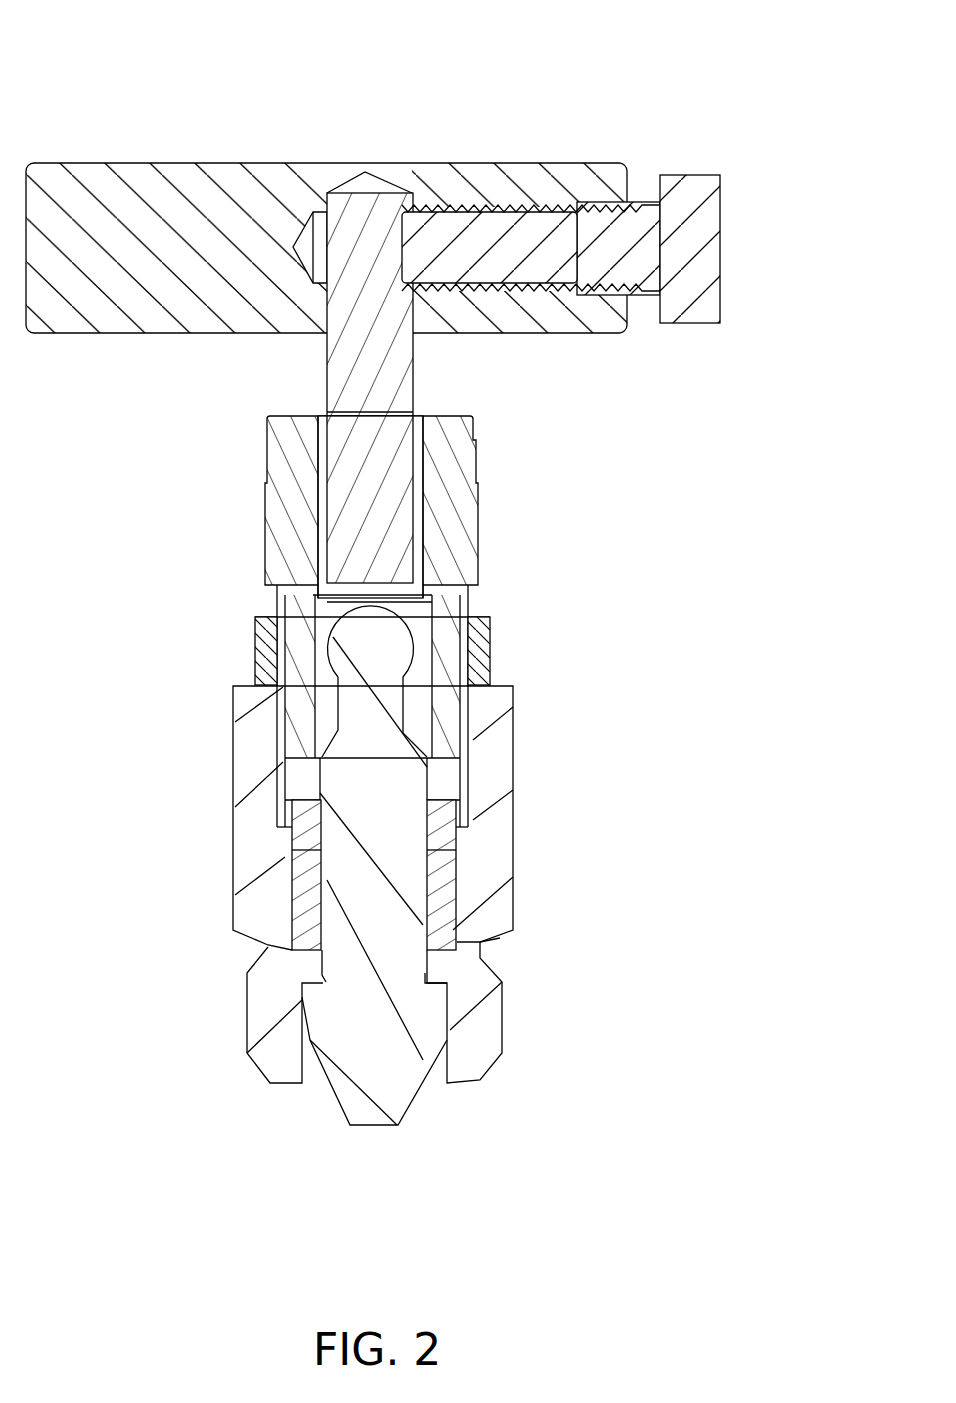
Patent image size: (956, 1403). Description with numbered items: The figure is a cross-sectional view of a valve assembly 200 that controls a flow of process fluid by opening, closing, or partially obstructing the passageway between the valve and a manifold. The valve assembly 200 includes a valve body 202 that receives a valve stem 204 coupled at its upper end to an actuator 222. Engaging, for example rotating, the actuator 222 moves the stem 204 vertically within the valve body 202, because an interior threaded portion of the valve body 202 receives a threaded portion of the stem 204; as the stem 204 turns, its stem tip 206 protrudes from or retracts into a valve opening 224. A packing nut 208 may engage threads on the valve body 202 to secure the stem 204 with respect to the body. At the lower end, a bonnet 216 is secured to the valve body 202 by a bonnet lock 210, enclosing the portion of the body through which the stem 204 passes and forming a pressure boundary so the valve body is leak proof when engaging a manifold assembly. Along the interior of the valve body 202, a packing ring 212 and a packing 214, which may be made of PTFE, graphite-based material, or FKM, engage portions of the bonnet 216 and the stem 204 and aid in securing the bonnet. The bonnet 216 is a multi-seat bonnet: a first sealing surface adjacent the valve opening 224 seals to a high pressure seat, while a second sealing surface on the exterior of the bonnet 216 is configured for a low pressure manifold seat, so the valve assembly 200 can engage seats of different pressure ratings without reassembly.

The valve assembly 200 is at (556, 84).
The valve body 202 is at (247, 488).
The valve stem 204 is at (415, 363).
The stem tip 206 is at (375, 1128).
The packing nut 208 is at (478, 522).
The bonnet lock 210 is at (492, 648).
The packing ring 212 is at (452, 828).
The packing 214 is at (455, 893).
The bonnet 216 is at (502, 1015).
The actuator 222 is at (214, 161).
The valve opening 224 is at (430, 1083).